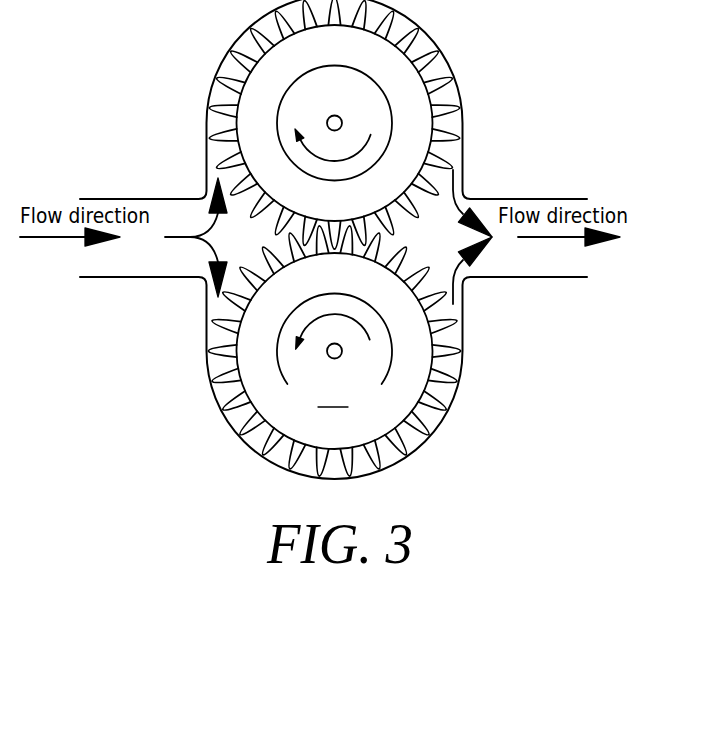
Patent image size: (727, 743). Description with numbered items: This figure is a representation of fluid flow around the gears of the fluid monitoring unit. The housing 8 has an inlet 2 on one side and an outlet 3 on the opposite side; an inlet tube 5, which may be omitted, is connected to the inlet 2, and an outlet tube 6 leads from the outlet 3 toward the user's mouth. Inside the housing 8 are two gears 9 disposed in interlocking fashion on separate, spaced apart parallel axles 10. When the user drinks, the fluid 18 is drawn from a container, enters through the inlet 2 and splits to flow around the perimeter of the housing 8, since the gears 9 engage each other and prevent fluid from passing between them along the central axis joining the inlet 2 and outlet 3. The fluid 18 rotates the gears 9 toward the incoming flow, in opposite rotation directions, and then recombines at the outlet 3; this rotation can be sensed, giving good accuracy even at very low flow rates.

The inlet 2 is at (203, 203).
The outlet 3 is at (465, 200).
The inlet tube 5 is at (105, 207).
The outlet tube 6 is at (523, 262).
The housing 8 is at (207, 337).
The gears 9 is at (238, 52).
The axles 10 is at (328, 119).
The fluid 18 is at (128, 258).